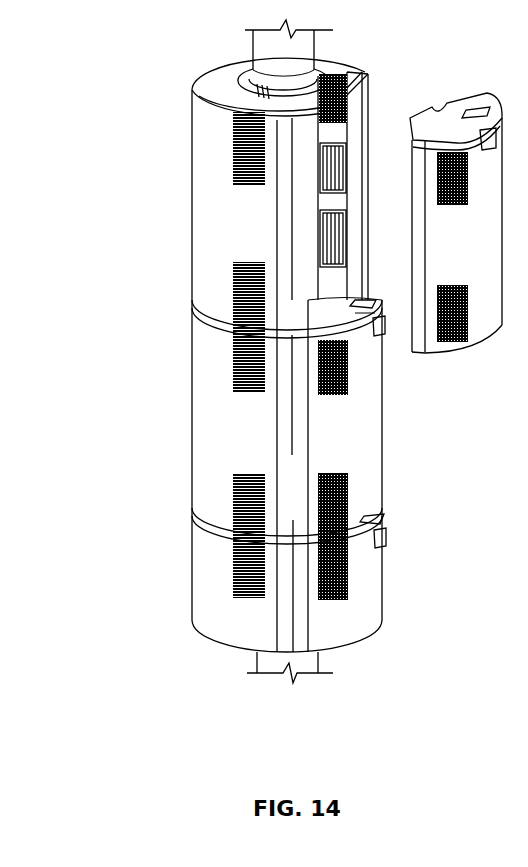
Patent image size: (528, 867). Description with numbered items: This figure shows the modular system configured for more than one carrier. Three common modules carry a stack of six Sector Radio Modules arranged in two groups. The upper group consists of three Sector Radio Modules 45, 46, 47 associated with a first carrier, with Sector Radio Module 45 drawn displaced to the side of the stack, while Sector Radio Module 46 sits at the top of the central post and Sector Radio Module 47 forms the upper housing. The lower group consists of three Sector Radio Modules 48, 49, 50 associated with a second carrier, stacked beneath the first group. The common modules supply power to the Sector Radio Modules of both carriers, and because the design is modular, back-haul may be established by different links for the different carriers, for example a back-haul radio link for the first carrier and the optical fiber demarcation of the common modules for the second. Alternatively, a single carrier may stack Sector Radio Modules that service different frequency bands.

The Sector Radio Module 45 is at (460, 108).
The Sector Radio Module 46 is at (246, 60).
The Sector Radio Module 47 is at (207, 198).
The Sector Radio Module 48 is at (383, 448).
The Sector Radio Module 49 is at (191, 438).
The Sector Radio Module 50 is at (360, 403).